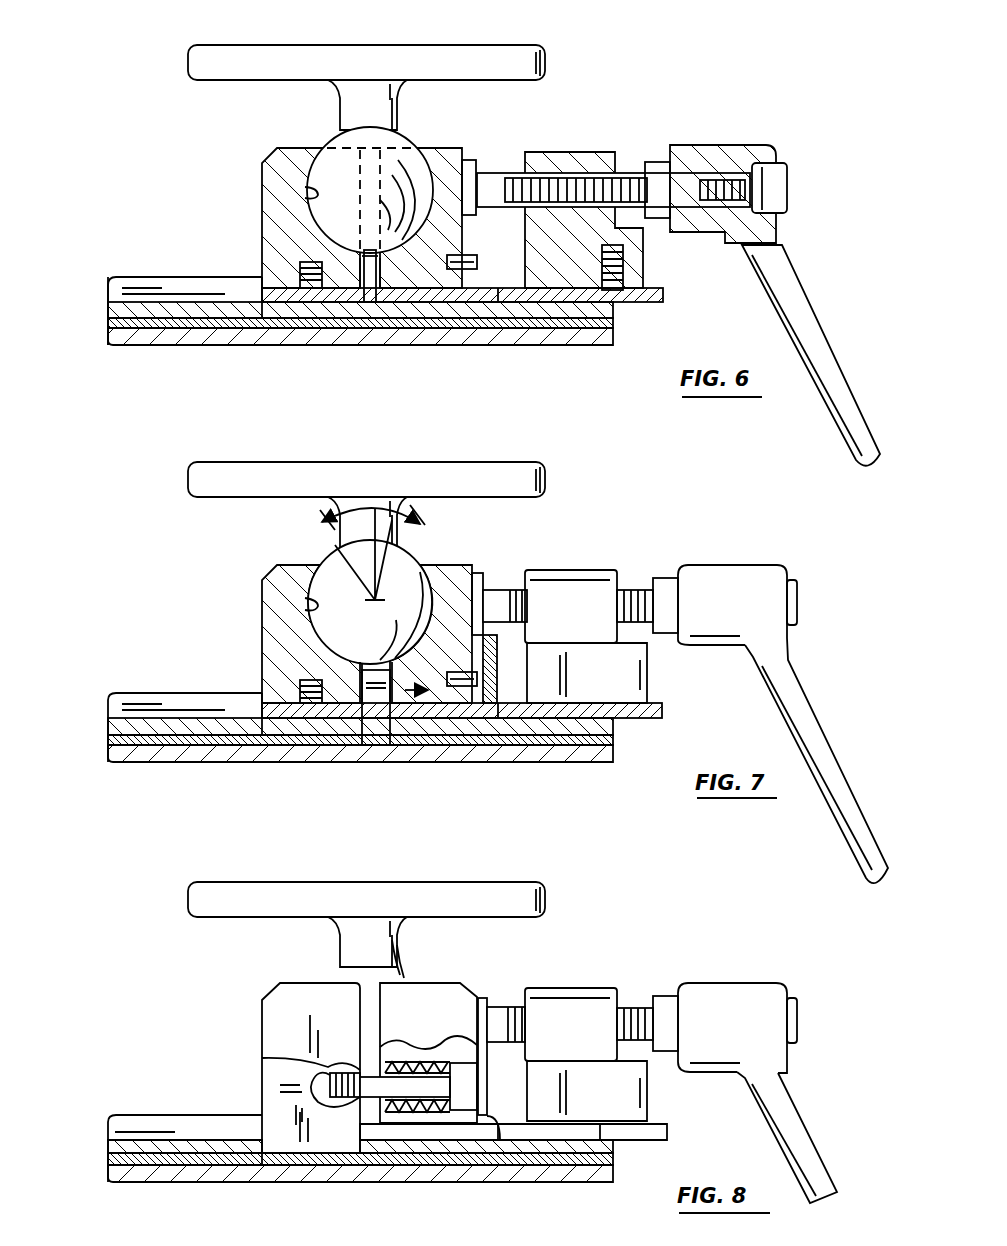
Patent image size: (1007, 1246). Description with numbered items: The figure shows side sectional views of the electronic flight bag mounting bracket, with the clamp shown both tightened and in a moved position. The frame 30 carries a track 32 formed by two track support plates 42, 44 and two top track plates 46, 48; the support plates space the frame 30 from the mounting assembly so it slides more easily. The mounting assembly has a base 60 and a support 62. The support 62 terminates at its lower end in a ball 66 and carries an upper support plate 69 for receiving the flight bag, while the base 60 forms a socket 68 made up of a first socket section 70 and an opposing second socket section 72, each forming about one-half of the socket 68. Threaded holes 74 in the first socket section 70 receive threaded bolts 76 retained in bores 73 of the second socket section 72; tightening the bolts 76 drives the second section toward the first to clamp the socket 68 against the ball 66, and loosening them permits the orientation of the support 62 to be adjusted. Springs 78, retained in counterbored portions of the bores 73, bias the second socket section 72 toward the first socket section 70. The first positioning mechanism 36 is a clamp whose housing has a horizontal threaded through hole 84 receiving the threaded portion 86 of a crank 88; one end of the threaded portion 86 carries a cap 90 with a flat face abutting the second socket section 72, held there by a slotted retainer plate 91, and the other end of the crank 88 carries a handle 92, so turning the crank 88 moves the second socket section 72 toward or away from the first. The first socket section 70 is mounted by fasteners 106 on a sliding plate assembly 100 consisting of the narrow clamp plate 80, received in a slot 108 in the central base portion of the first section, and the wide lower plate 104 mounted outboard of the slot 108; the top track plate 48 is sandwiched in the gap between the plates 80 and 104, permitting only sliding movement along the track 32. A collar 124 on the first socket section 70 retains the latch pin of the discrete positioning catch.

In FIG. 6, the frame 30 is at (158, 262).
In FIG. 7, the frame 30 is at (160, 664).
In FIG. 8, the frame 30 is at (168, 1070).
In FIG. 6, the track 32 is at (100, 307).
In FIG. 6, the first positioning mechanism 36 is at (766, 142).
In FIG. 7, the first positioning mechanism 36 is at (746, 544).
In FIG. 8, the first positioning mechanism 36 is at (744, 952).
In FIG. 6, the track support plate 42 is at (186, 318).
In FIG. 7, the track support plate 42 is at (168, 752).
In FIG. 8, the track support plate 42 is at (176, 1167).
In FIG. 6, the track support plate 44 is at (600, 330).
In FIG. 7, the track support plate 44 is at (598, 752).
In FIG. 8, the track support plate 44 is at (590, 1168).
In FIG. 6, the top track plate 46 is at (136, 337).
In FIG. 7, the top track plate 46 is at (108, 728).
In FIG. 8, the top track plate 46 is at (113, 1147).
In FIG. 6, the top track plate 48 is at (608, 315).
In FIG. 7, the top track plate 48 is at (608, 730).
In FIG. 8, the top track plate 48 is at (612, 1147).
In FIG. 6, the base 60 is at (331, 188).
In FIG. 7, the base 60 is at (344, 604).
In FIG. 8, the base 60 is at (353, 1043).
In FIG. 6, the support 62 is at (549, 50).
In FIG. 7, the support 62 is at (368, 436).
In FIG. 8, the support 62 is at (547, 884).
In FIG. 6, the ball 66 is at (405, 136).
In FIG. 7, the ball 66 is at (326, 560).
In FIG. 8, the ball 66 is at (406, 977).
In FIG. 6, the socket 68 is at (310, 192).
In FIG. 7, the socket 68 is at (310, 627).
In FIG. 6, the upper support plate 69 is at (478, 45).
In FIG. 7, the upper support plate 69 is at (278, 437).
In FIG. 8, the upper support plate 69 is at (314, 858).
In FIG. 6, the first socket section 70 is at (265, 160).
In FIG. 7, the first socket section 70 is at (258, 573).
In FIG. 8, the first socket section 70 is at (262, 988).
In FIG. 6, the second socket section 72 is at (445, 150).
In FIG. 7, the second socket section 72 is at (457, 566).
In FIG. 8, the second socket section 72 is at (470, 982).
In FIG. 8, the bores 73 is at (410, 1060).
In FIG. 8, the holes 74 is at (328, 1066).
In FIG. 6, the bolts 76 is at (370, 265).
In FIG. 7, the bolts 76 is at (378, 703).
In FIG. 8, the bolts 76 is at (470, 1086).
In FIG. 8, the springs 78 is at (444, 1062).
In FIG. 6, the clamp plate 80 is at (660, 296).
In FIG. 7, the clamp plate 80 is at (664, 713).
In FIG. 8, the clamp plate 80 is at (668, 1131).
In FIG. 6, the through hole 84 is at (572, 188).
In FIG. 6, the threaded portion 86 is at (625, 165).
In FIG. 7, the threaded portion 86 is at (635, 578).
In FIG. 8, the threaded portion 86 is at (630, 997).
In FIG. 6, the crank 88 is at (612, 150).
In FIG. 7, the crank 88 is at (566, 570).
In FIG. 8, the crank 88 is at (570, 988).
In FIG. 6, the cap 90 is at (472, 160).
In FIG. 7, the cap 90 is at (482, 582).
In FIG. 8, the cap 90 is at (488, 1002).
In FIG. 6, the slotted retainer plate 91 is at (503, 290).
In FIG. 7, the slotted retainer plate 91 is at (492, 720).
In FIG. 8, the slotted retainer plate 91 is at (492, 1124).
In FIG. 6, the handle 92 is at (823, 337).
In FIG. 7, the handle 92 is at (820, 730).
In FIG. 8, the handle 92 is at (800, 1111).
In FIG. 6, the sliding plate assembly 100 is at (470, 346).
In FIG. 7, the sliding plate assembly 100 is at (528, 764).
In FIG. 6, the lower plate 104 is at (306, 320).
In FIG. 7, the lower plate 104 is at (306, 738).
In FIG. 8, the lower plate 104 is at (292, 1157).
In FIG. 6, the fasteners 106 is at (298, 270).
In FIG. 7, the fasteners 106 is at (298, 684).
In FIG. 6, the slot 108 is at (262, 295).
In FIG. 7, the slot 108 is at (262, 712).
In FIG. 8, the collar 124 is at (290, 1112).